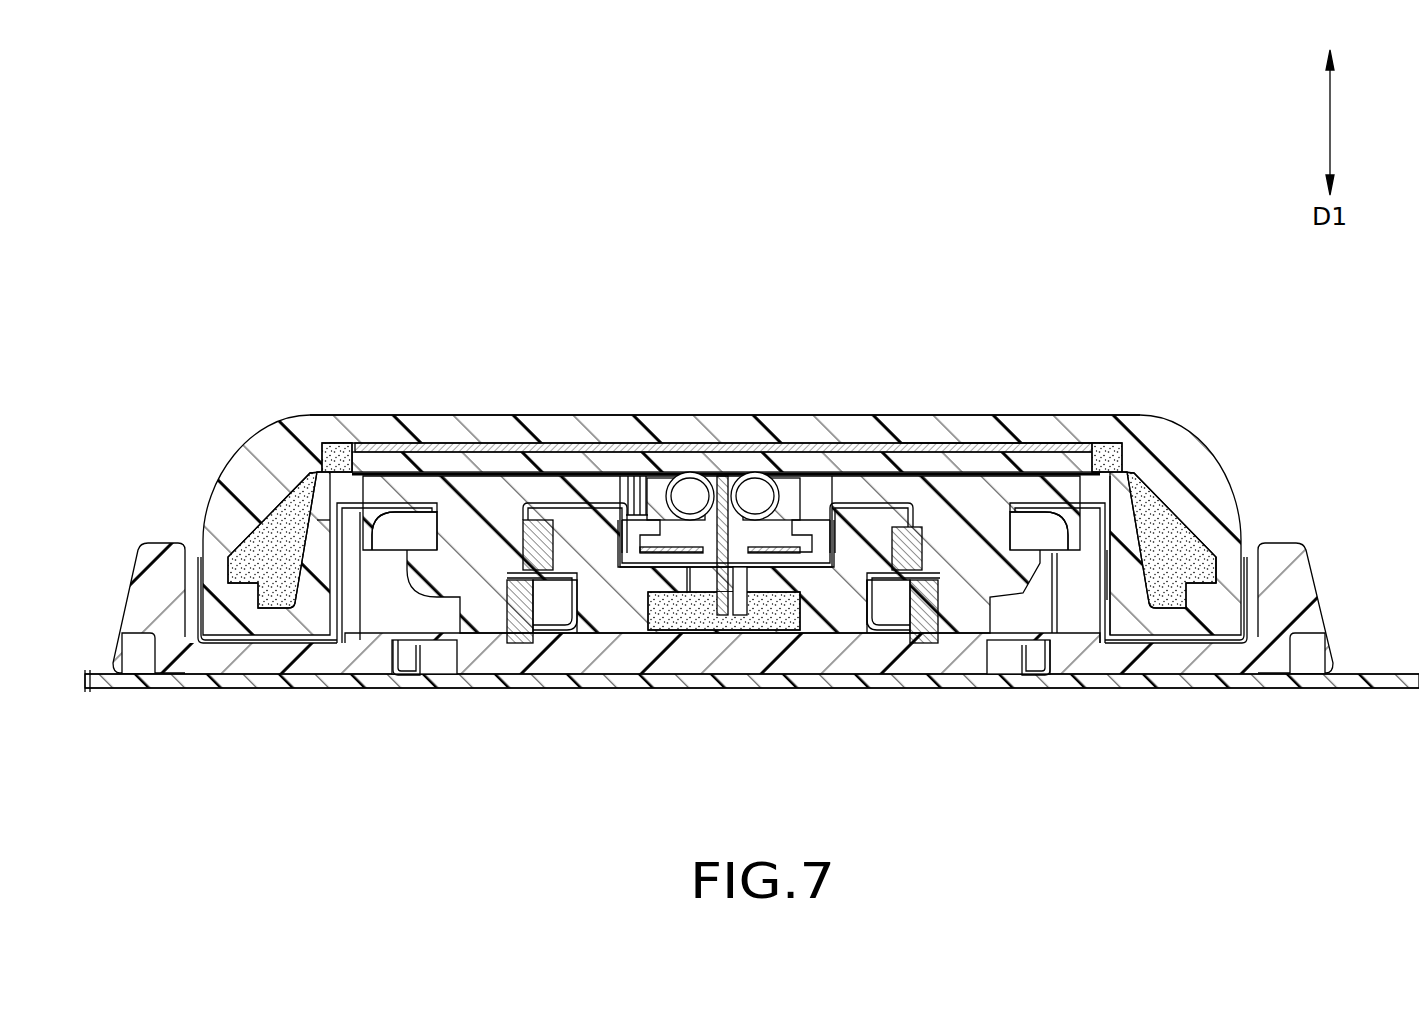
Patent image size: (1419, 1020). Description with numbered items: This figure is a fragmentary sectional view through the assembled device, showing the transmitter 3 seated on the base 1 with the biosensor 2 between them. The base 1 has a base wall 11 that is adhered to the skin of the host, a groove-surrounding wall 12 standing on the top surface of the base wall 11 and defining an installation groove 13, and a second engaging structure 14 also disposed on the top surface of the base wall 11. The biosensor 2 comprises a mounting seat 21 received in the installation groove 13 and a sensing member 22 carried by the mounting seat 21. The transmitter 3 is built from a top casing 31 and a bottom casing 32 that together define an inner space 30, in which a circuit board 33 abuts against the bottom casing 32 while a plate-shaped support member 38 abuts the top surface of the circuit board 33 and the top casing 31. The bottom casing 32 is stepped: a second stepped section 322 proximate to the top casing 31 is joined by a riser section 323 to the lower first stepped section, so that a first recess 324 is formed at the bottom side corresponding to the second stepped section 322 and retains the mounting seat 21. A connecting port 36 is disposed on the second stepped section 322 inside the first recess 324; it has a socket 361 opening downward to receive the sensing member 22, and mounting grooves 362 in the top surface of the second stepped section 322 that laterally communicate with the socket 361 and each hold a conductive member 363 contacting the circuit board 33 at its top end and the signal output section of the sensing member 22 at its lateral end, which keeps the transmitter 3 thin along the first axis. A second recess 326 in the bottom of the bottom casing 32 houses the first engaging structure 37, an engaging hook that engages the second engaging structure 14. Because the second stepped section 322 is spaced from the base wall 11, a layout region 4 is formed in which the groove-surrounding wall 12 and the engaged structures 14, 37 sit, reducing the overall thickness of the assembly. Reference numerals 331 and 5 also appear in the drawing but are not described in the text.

The base 1 is at (1320, 573).
The base wall 11 is at (627, 655).
The groove-surrounding wall 12 is at (903, 608).
The installation groove 13 is at (876, 605).
The second engaging structure 14 is at (393, 530).
The biosensor 2 is at (857, 500).
The mounting seat 21 is at (570, 590).
The sensing member 22 is at (705, 605).
The transmitter 3 is at (1007, 413).
The inner space 30 is at (1147, 500).
The top casing 31 is at (323, 415).
The bottom casing 32 is at (268, 608).
The second stepped section 322 is at (570, 488).
The riser section 323 is at (318, 520).
The first recess 324 is at (522, 558).
The second recess 326 is at (300, 515).
The circuit board 33 is at (903, 448).
The board edge portion 331 is at (960, 455).
The connecting port 36 is at (805, 505).
The socket 361 is at (738, 560).
The mounting grooves 362 is at (678, 492).
The conductive member 363 is at (700, 492).
The first engaging structure 37 is at (425, 583).
The support member 38 is at (618, 470).
The layout region 4 is at (1113, 560).
The sealing foam 5 is at (1213, 563).